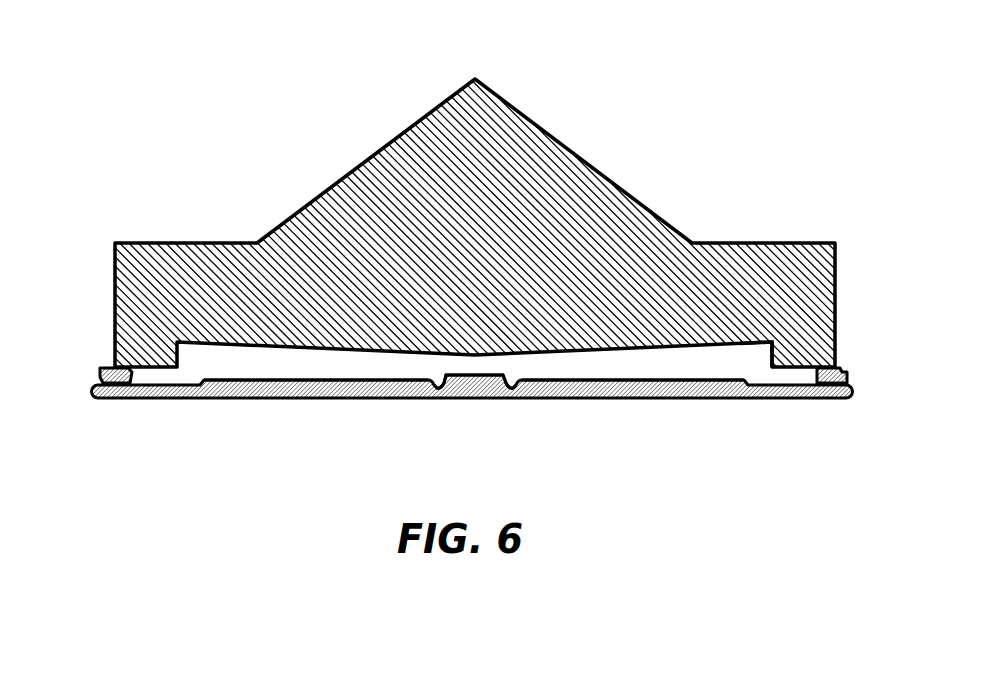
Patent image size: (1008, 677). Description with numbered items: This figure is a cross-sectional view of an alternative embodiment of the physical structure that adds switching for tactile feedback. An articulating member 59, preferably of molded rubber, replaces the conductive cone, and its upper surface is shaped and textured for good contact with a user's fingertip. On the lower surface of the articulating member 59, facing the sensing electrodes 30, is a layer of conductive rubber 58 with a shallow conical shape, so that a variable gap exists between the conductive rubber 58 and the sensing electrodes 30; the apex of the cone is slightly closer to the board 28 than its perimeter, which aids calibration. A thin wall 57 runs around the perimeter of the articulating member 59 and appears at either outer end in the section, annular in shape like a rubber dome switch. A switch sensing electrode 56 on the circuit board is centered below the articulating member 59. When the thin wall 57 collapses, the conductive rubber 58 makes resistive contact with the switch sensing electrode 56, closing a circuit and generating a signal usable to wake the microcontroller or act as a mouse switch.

The articulating member 59 is at (542, 127).
The board 28 is at (830, 394).
The sensing electrodes 30 is at (340, 397).
The switch sensing electrode 56 is at (473, 397).
The conductive rubber layer 58 is at (747, 338).
The thin wall 57 is at (843, 368).